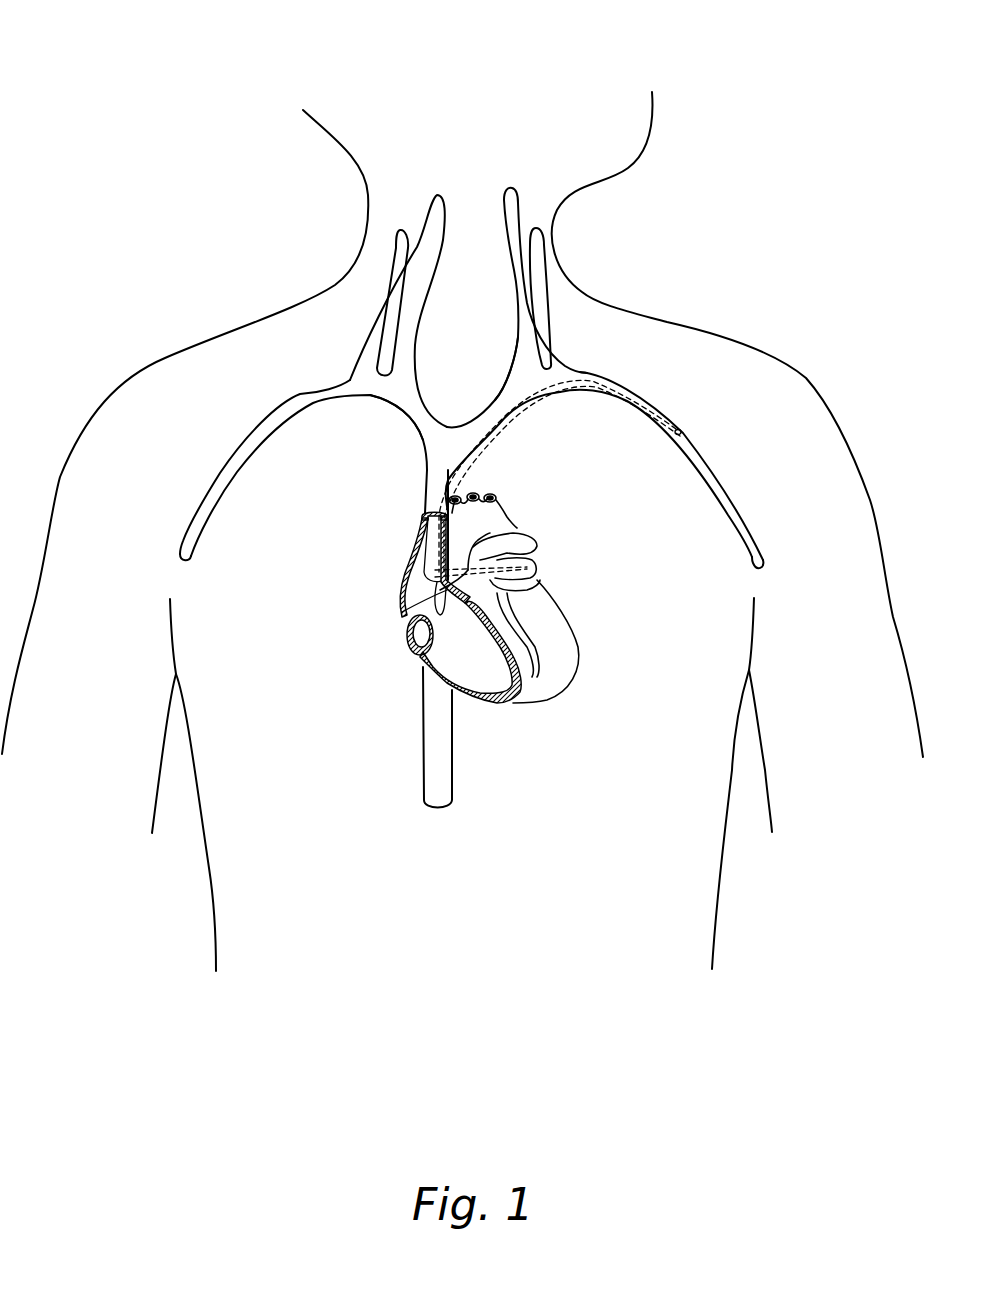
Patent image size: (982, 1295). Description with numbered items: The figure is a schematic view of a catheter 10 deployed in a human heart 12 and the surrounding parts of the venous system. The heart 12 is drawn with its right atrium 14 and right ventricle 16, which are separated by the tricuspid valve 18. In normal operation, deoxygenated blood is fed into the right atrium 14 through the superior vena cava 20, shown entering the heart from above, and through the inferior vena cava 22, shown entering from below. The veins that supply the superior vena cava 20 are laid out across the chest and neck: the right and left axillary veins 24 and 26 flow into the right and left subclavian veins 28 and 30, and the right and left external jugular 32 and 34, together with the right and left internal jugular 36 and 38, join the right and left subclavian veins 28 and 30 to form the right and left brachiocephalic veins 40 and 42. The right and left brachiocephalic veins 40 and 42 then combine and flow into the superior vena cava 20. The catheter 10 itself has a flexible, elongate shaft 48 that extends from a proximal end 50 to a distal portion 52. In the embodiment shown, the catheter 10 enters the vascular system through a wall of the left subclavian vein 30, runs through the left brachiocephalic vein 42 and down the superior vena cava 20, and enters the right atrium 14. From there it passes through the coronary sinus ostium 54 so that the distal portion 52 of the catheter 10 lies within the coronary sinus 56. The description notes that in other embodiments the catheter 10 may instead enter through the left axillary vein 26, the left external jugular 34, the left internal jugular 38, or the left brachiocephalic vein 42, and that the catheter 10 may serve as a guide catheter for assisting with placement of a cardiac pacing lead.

The catheter 10 is at (158, 66).
The heart 12 is at (585, 716).
The right atrium 14 is at (405, 576).
The right ventricle 16 is at (480, 683).
The tricuspid valve 18 is at (413, 653).
The superior vena cava 20 is at (425, 496).
The inferior vena cava 22 is at (424, 752).
The right axillary vein 24 is at (179, 543).
The left axillary vein 26 is at (766, 559).
The right subclavian vein 28 is at (285, 412).
The left subclavian vein 30 is at (584, 369).
The right external jugular 32 is at (390, 284).
The left external jugular 34 is at (552, 300).
The right internal jugular 36 is at (437, 266).
The left internal jugular 38 is at (514, 313).
The right brachiocephalic vein 40 is at (405, 399).
The left brachiocephalic vein 42 is at (513, 379).
The shaft 48 is at (570, 383).
The proximal end 50 is at (641, 393).
The distal portion 52 is at (527, 568).
The coronary sinus ostium 54 is at (408, 613).
The coronary sinus 56 is at (490, 533).